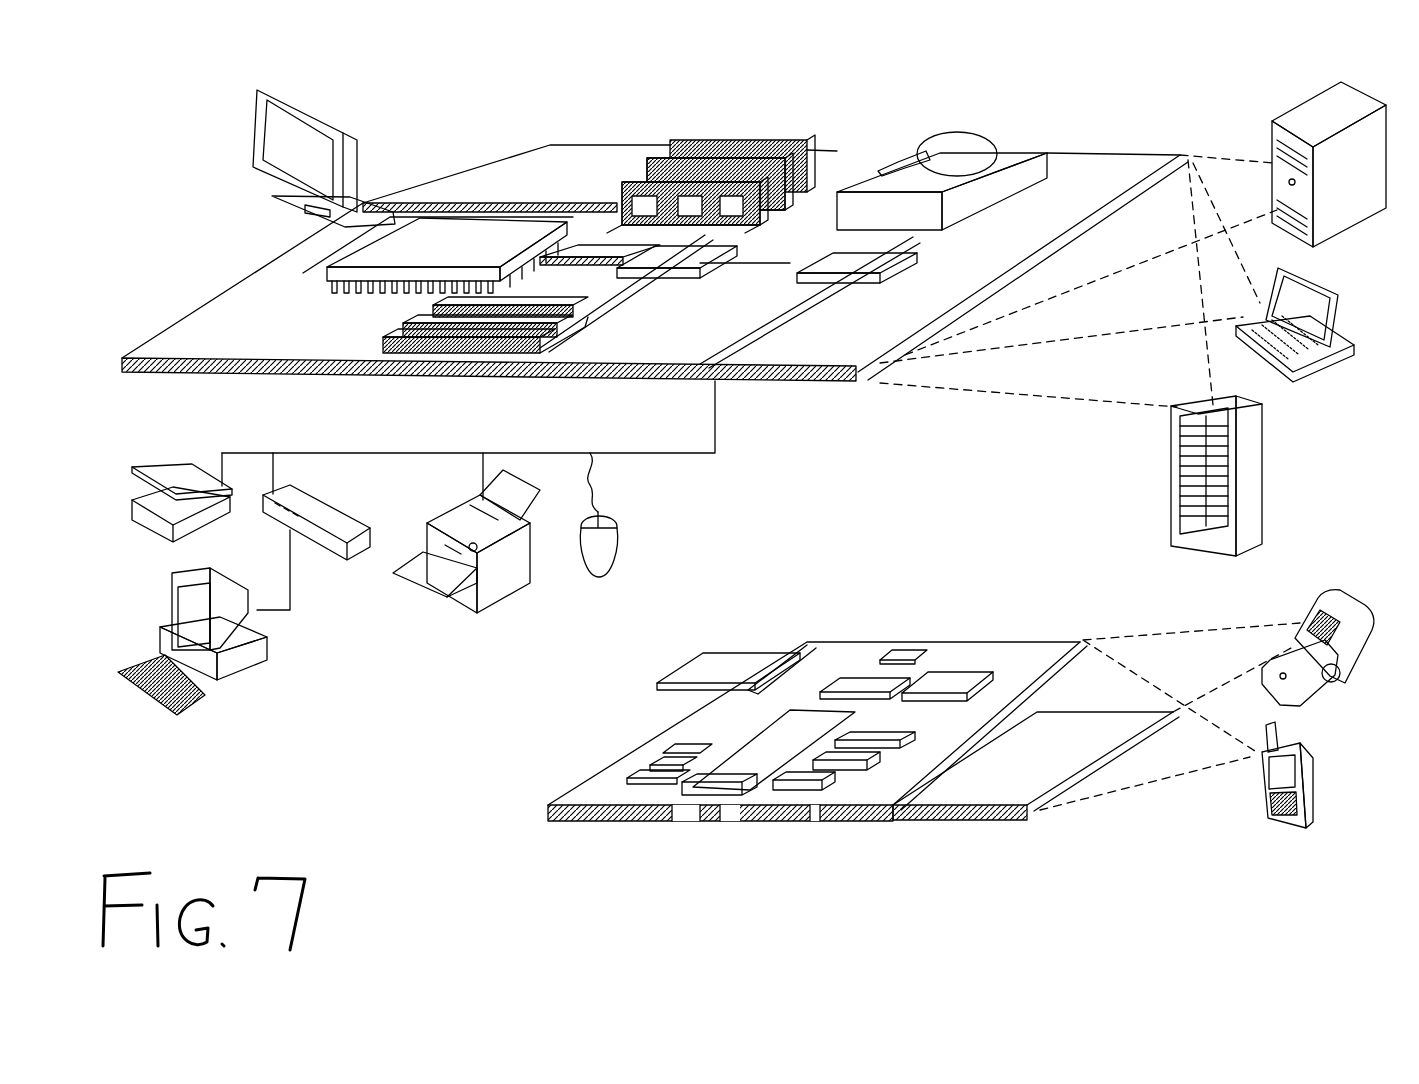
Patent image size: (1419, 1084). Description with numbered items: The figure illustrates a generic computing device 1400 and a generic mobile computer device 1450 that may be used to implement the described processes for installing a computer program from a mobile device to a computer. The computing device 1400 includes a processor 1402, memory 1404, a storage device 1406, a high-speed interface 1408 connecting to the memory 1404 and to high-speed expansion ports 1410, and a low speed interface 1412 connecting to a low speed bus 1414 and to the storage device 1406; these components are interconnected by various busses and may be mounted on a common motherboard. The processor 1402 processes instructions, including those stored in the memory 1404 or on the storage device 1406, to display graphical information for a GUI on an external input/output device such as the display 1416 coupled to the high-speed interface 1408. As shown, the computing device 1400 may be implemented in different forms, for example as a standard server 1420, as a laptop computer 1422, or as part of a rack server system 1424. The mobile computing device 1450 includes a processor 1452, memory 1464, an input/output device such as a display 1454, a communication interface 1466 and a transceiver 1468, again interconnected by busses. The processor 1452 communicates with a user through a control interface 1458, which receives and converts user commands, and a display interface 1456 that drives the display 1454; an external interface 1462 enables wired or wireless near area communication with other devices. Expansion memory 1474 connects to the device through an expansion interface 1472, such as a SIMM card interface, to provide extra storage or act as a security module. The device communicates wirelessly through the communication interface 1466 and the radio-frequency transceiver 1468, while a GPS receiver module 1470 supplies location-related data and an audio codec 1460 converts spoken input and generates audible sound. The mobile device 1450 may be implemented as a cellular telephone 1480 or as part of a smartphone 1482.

The computing device 1400 is at (466, 118).
The processor 1402 is at (300, 274).
The memory 1404 is at (684, 140).
The storage device 1406 is at (933, 140).
The high-speed interface 1408 is at (580, 207).
The high-speed expansion ports 1410 is at (400, 330).
The low speed interface 1412 is at (830, 270).
The low speed bus 1414 is at (746, 381).
The display 1416 is at (260, 90).
The standard server 1420 is at (1270, 130).
The laptop computer 1422 is at (1320, 296).
The rack server system 1424 is at (1168, 498).
The mobile computer device 1450 is at (521, 825).
The processor 1452 is at (737, 777).
The display 1454 is at (1005, 808).
The display interface 1456 is at (820, 822).
The control interface 1458 is at (860, 790).
The audio codec 1460 is at (877, 748).
The external interface 1462 is at (700, 822).
The memory 1464 is at (650, 765).
The communication interface 1466 is at (866, 680).
The transceiver 1468 is at (945, 683).
The GPS receiver module 1470 is at (913, 655).
The expansion interface 1472 is at (782, 665).
The expansion memory 1474 is at (715, 658).
The cellular telephone 1480 is at (1318, 608).
The smartphone 1482 is at (1262, 786).